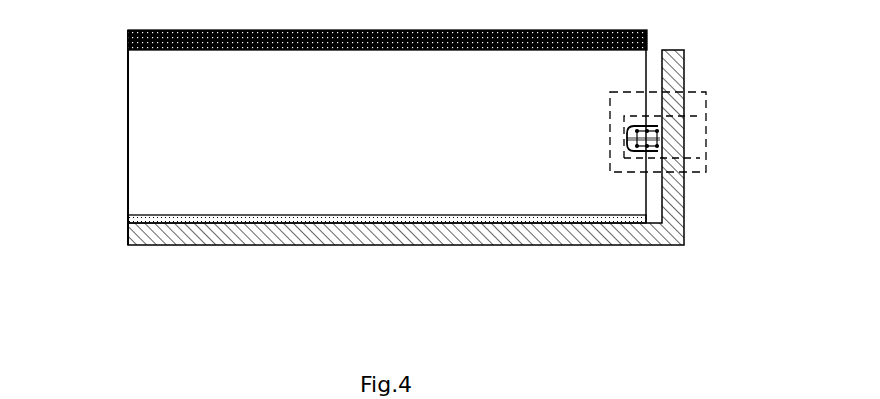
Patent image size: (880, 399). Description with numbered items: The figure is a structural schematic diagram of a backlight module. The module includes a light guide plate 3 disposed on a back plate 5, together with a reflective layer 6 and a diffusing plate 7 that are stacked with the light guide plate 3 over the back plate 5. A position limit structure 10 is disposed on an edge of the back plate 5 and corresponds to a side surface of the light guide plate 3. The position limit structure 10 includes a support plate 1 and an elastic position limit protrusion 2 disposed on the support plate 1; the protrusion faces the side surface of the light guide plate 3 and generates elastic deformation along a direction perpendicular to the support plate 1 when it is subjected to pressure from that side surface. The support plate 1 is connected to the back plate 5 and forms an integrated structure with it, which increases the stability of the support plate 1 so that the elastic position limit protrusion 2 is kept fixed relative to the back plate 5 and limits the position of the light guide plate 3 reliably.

The support plate 1 is at (684, 157).
The elastic position limit protrusion 2 is at (664, 124).
The light guide plate 3 is at (127, 137).
The back plate 5 is at (345, 246).
The reflective layer 6 is at (127, 219).
The diffusing plate 7 is at (127, 44).
The position limit structure 10 is at (706, 130).